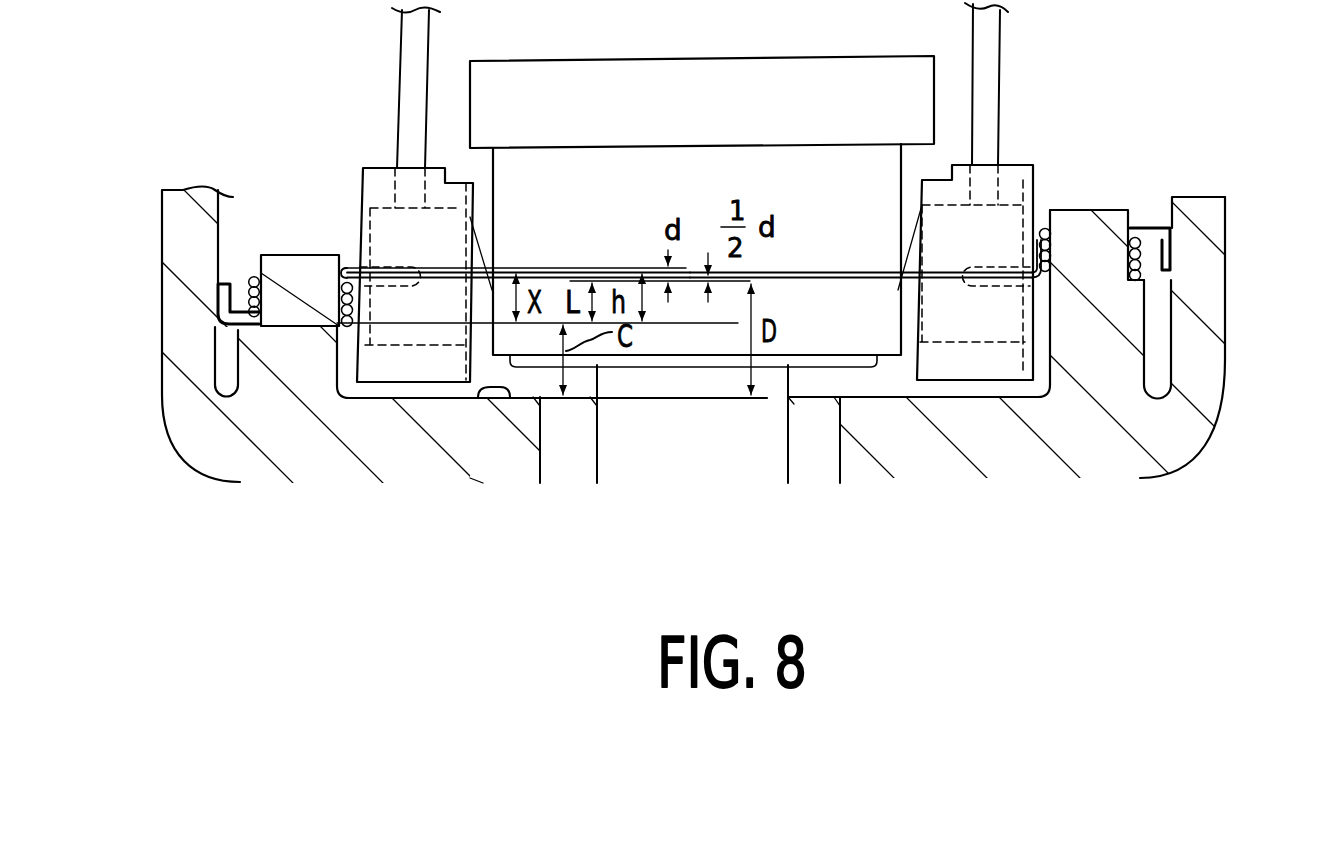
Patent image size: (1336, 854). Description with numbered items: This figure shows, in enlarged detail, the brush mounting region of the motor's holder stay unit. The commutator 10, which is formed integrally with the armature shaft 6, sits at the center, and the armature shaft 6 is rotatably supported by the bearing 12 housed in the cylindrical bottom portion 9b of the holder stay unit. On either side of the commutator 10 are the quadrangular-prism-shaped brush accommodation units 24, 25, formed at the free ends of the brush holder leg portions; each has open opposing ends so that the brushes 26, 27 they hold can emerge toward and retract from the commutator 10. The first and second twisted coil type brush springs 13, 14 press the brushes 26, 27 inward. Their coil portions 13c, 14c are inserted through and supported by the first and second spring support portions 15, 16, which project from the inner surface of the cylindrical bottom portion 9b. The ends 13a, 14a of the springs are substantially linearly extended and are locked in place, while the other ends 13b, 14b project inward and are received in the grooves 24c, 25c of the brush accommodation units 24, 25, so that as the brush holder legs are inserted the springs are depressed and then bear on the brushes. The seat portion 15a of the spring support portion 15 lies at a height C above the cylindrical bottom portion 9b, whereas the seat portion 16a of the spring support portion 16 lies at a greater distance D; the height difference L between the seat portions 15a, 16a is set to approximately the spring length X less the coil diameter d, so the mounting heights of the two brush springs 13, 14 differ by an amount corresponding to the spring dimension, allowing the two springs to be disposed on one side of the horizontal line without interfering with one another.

The commutator 10 is at (708, 170).
The brush 26 is at (470, 270).
The brush 27 is at (900, 282).
The brush accommodation unit 24 is at (417, 370).
The groove 24c is at (387, 262).
The brush accommodation unit 25 is at (972, 363).
The groove 25c is at (1001, 297).
The first brush spring 13 is at (238, 252).
The end of brush spring 13a is at (218, 301).
The other end of brush spring 13b is at (360, 315).
The coil portion 13c is at (250, 287).
The first spring support portion 15 is at (308, 264).
The seat portion 15a is at (252, 333).
The cylindrical bottom portion 9b is at (487, 388).
The bearing 12 is at (586, 457).
The armature shaft 6 is at (748, 467).
The second brush spring 14 is at (1156, 202).
The end of brush spring 14a is at (1170, 257).
The other end of brush spring 14b is at (1058, 228).
The coil portion 14c is at (1165, 222).
The second spring support portion 16 is at (1108, 217).
The seat portion 16a is at (1128, 300).